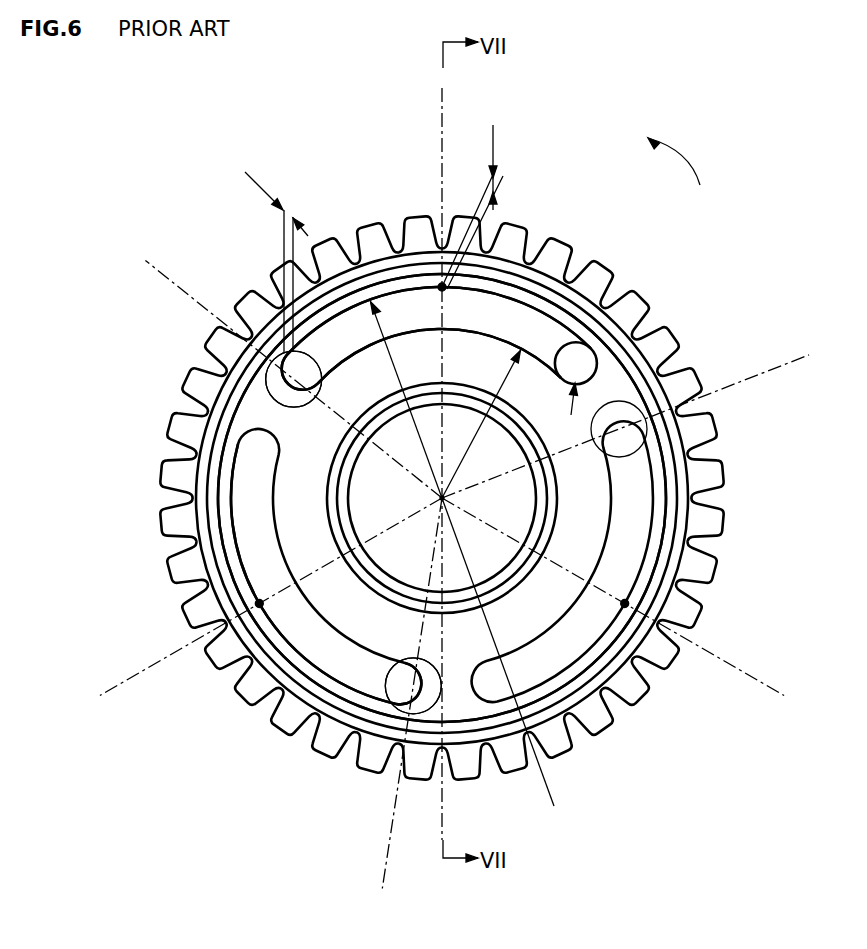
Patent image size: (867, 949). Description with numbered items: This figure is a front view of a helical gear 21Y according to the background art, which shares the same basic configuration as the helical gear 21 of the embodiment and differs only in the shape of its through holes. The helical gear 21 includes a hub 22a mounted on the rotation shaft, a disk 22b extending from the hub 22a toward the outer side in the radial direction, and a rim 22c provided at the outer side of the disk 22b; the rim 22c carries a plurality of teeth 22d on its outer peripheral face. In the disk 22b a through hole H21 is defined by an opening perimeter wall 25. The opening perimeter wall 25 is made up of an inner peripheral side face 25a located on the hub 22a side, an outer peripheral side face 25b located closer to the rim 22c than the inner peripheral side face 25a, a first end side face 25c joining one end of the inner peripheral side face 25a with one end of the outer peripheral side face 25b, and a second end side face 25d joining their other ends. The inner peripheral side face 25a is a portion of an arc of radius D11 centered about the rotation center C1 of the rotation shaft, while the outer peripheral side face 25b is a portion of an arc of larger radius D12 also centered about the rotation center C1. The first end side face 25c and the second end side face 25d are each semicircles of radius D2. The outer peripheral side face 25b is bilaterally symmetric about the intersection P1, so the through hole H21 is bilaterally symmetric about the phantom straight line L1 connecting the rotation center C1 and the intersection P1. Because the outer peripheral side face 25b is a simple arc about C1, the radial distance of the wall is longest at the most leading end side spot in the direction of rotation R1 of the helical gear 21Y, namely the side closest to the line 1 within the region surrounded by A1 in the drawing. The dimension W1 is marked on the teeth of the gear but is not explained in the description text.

The helical gear 21Y is at (441, 492).
The helical gear 21 is at (250, 541).
The opening perimeter wall 25 is at (250, 497).
The inner peripheral side face 25a is at (556, 370).
The outer peripheral side face 25b is at (513, 300).
The first end side face 25c is at (282, 362).
The second end side face 25d is at (632, 370).
The hub 22a is at (283, 383).
The disk 22b is at (381, 636).
The rim 22c is at (403, 705).
The teeth 22d is at (345, 655).
The region A1 is at (270, 366).
The rotation center C1 is at (576, 375).
The radius D11 is at (481, 425).
The radius D12 is at (455, 554).
The radius D2 is at (557, 400).
The through hole H21 is at (407, 310).
The phantom straight line L1 is at (442, 452).
The intersection P1 is at (441, 284).
The direction of rotation R1 is at (697, 161).
The tooth width W1 is at (388, 238).
The line 1 is at (474, 577).